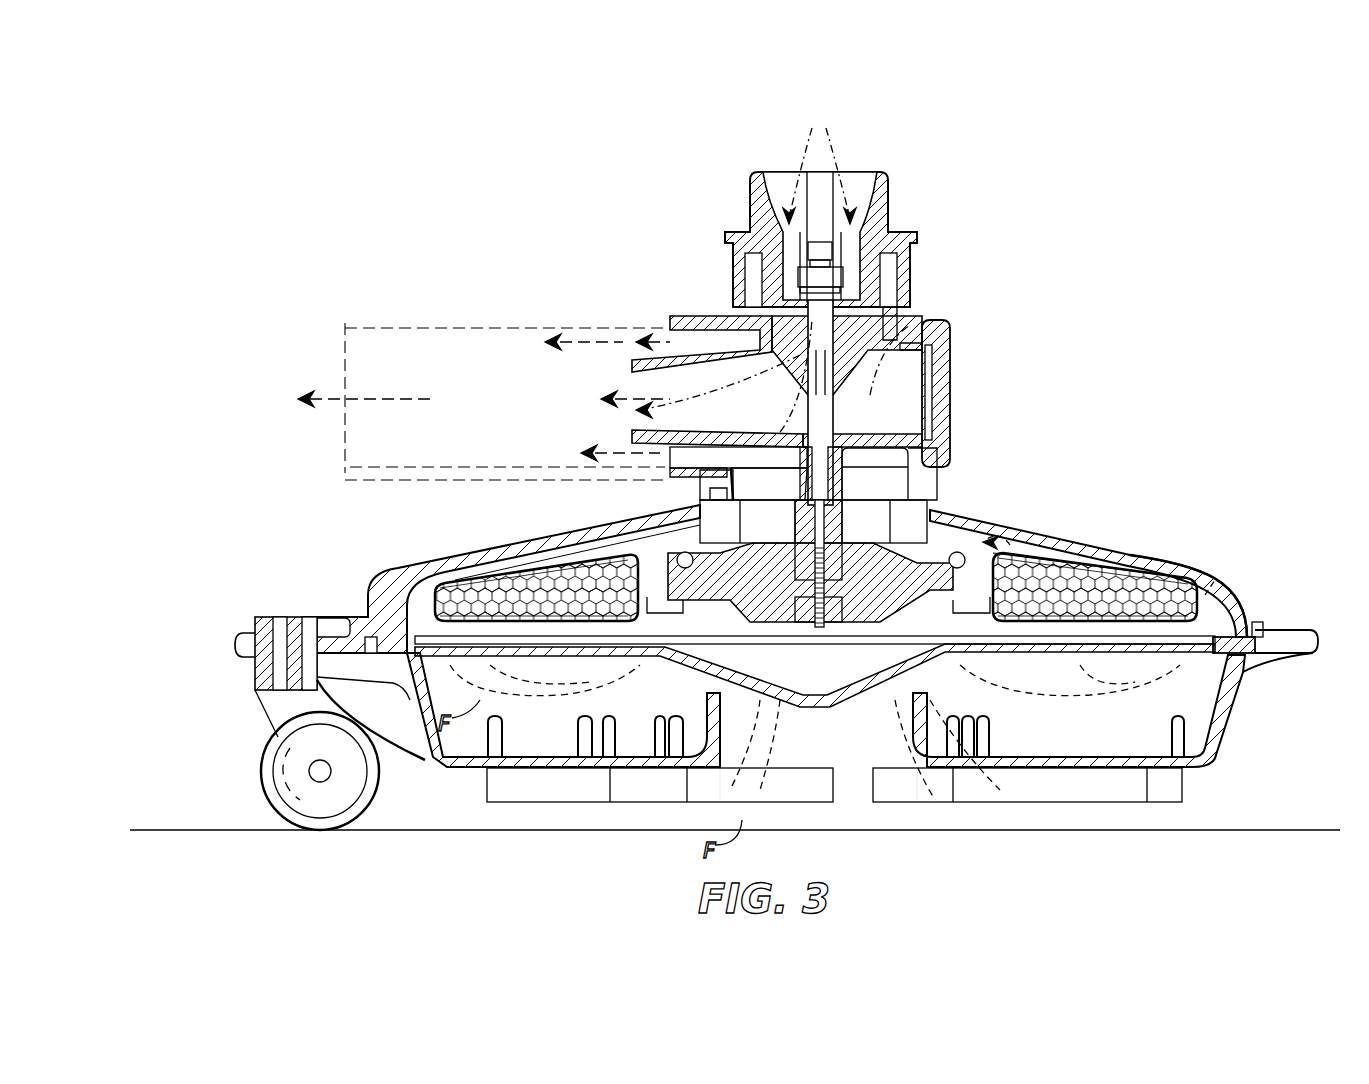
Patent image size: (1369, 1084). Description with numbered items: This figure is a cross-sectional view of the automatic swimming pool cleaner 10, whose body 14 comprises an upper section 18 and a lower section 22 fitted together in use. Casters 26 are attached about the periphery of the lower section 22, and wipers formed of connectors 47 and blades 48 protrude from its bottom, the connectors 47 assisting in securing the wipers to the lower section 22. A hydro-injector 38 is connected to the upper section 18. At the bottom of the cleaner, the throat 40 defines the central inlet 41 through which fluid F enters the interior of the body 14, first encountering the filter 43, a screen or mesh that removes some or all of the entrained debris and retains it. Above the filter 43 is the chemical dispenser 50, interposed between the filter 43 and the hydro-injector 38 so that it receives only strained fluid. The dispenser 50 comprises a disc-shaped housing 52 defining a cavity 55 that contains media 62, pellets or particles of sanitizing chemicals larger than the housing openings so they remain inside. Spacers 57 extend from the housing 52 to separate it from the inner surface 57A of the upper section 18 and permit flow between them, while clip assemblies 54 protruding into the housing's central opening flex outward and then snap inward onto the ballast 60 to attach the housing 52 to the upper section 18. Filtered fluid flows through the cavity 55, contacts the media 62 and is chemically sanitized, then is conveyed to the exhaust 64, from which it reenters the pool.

The cleaner 10 is at (1240, 366).
The body 14 is at (1177, 546).
The upper section 18 is at (1212, 575).
The lower section 22 is at (1212, 752).
The casters 26 is at (262, 785).
The hydro-injector 38 is at (1010, 273).
The throat 40 is at (920, 695).
The central inlet 41 is at (855, 770).
The filter 43 is at (753, 677).
The connectors 47 is at (578, 733).
The blades 48 is at (1175, 787).
The dispenser 50 is at (1220, 625).
The housing 52 is at (1147, 630).
The clip assemblies 54 is at (1053, 627).
The cavity 55 is at (458, 633).
The spacers 57 is at (1017, 548).
The inner surface 57A is at (1203, 590).
The ballast 60 is at (935, 640).
The media 62 is at (643, 633).
The exhaust 64 is at (345, 433).